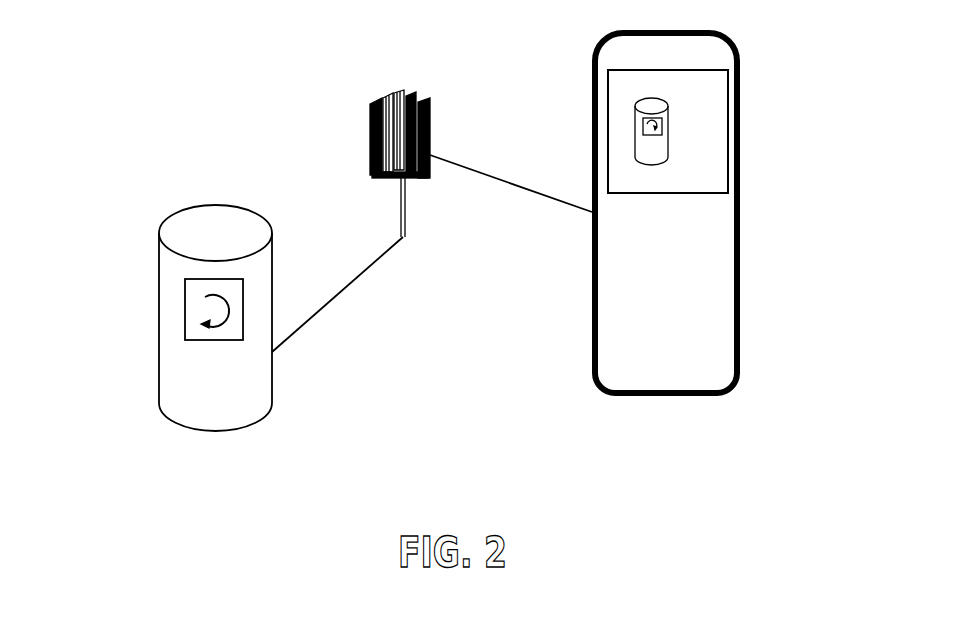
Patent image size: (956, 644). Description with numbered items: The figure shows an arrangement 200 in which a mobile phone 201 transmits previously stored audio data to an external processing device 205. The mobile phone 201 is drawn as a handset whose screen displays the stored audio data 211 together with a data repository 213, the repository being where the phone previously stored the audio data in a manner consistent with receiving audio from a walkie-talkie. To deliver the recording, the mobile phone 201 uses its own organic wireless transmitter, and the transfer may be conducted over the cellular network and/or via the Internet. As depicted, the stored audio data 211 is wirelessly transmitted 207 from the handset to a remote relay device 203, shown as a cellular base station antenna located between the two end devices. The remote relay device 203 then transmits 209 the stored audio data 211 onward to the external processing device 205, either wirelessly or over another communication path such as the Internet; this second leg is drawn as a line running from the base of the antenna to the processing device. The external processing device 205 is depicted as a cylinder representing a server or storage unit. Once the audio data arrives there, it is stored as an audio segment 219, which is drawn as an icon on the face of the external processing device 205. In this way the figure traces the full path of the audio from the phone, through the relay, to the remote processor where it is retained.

The system 200 is at (552, 432).
The mobile phone 201 is at (738, 290).
The remote relay device 203 is at (407, 120).
The external processing device 205 is at (243, 401).
The wireless transmission 207 is at (490, 177).
The transmission 209 is at (337, 292).
The stored audio data 211 is at (645, 125).
The data repository 213 is at (653, 150).
The audio segment 219 is at (185, 305).